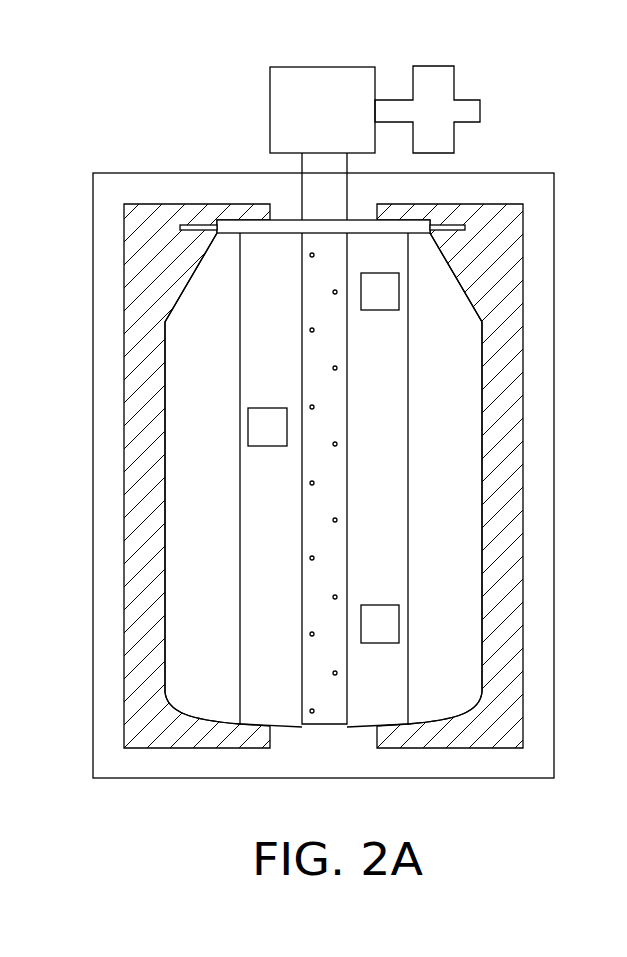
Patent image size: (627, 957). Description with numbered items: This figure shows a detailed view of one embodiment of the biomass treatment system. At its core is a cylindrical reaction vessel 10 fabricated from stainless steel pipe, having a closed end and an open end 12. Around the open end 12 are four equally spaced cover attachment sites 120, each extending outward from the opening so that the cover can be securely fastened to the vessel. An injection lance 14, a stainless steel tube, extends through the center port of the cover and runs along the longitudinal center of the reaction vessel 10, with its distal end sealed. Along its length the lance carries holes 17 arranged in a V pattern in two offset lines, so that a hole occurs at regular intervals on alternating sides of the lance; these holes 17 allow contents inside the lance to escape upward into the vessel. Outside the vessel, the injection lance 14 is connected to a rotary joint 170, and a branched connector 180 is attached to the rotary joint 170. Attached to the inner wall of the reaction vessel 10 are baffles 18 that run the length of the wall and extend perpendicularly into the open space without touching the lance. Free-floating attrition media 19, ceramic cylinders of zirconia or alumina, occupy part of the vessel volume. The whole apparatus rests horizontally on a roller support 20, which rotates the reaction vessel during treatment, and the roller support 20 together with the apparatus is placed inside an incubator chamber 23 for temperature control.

The reaction vessel 10 is at (284, 706).
The open end 12 is at (290, 232).
The injection lance 14 is at (313, 593).
The holes 17 is at (320, 484).
The baffles 18 is at (460, 359).
The attrition media 19 is at (375, 293).
The roller support 20 is at (190, 742).
The incubator chamber 23 is at (408, 780).
The cover attachment sites 120 is at (450, 230).
The rotary joint 170 is at (313, 66).
The branched connector 180 is at (433, 65).